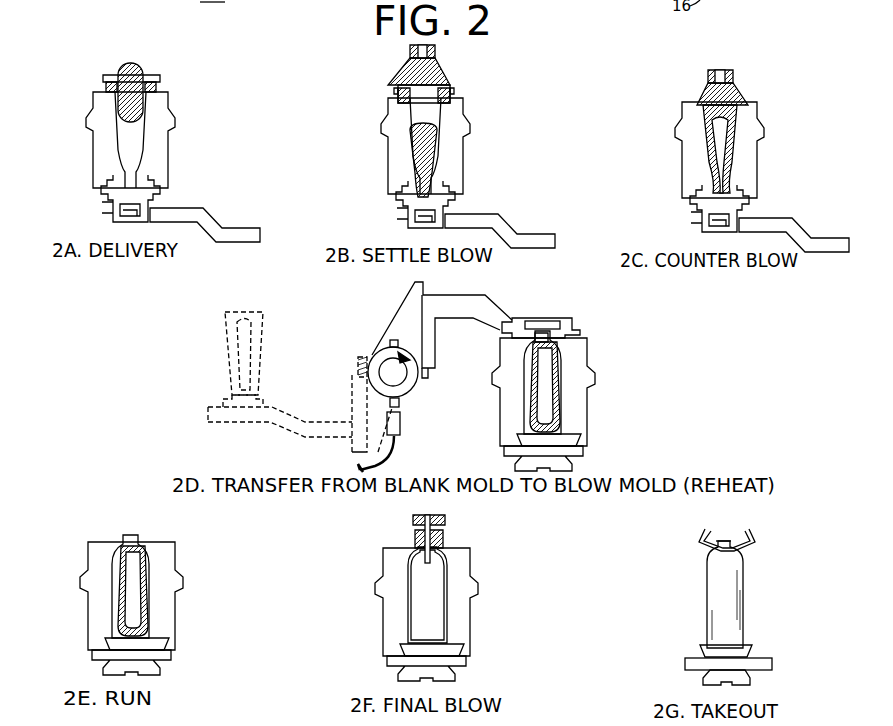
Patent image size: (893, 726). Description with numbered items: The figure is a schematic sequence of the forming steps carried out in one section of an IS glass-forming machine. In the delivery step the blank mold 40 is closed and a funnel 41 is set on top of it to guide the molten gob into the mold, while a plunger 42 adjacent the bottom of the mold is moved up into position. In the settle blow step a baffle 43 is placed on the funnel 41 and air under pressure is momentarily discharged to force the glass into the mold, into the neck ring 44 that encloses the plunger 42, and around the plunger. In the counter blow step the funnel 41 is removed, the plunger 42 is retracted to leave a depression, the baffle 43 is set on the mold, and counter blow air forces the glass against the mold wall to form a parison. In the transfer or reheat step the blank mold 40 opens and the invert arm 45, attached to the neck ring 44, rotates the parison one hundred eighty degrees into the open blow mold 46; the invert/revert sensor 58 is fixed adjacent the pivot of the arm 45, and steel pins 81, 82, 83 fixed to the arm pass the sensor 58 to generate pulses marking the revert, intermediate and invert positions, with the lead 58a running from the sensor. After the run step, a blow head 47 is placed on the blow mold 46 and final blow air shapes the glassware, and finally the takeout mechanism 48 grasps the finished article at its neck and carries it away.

In FIG. 2A, the blank mold 40 is at (95, 140).
In FIG. 2B, the blank mold 40 is at (390, 147).
In FIG. 2C, the blank mold 40 is at (690, 148).
In FIG. 2A, the funnel 41 is at (161, 89).
In FIG. 2B, the funnel 41 is at (448, 93).
In FIG. 2C, the funnel 41 is at (720, 149).
In FIG. 2A, the plunger 42 is at (102, 198).
In FIG. 2B, the plunger 42 is at (398, 203).
In FIG. 2C, the plunger 42 is at (717, 222).
In FIG. 2B, the baffle 43 is at (448, 72).
In FIG. 2C, the baffle 43 is at (743, 90).
In FIG. 2A, the neck ring 44 is at (157, 200).
In FIG. 2B, the neck ring 44 is at (457, 203).
In FIG. 2C, the neck ring 44 is at (748, 208).
In FIG. 2D, the neck ring 44 is at (573, 337).
In FIG. 2D, the invert arm 45 is at (403, 318).
In FIG. 2D, the blow mold 46 is at (575, 412).
In FIG. 2E, the blow mold 46 is at (92, 603).
In FIG. 2F, the blow mold 46 is at (388, 610).
In FIG. 2F, the blow head 47 is at (443, 538).
In FIG. 2G, the takeout mechanism 48 is at (753, 542).
In FIG. 2D, the invert/revert sensor 58 is at (400, 426).
In FIG. 2D, the sensor cable 58a is at (398, 452).
In FIG. 2D, the steel pin 81 is at (390, 342).
In FIG. 2D, the steel pin 82 is at (370, 390).
In FIG. 2D, the steel pin 83 is at (399, 403).